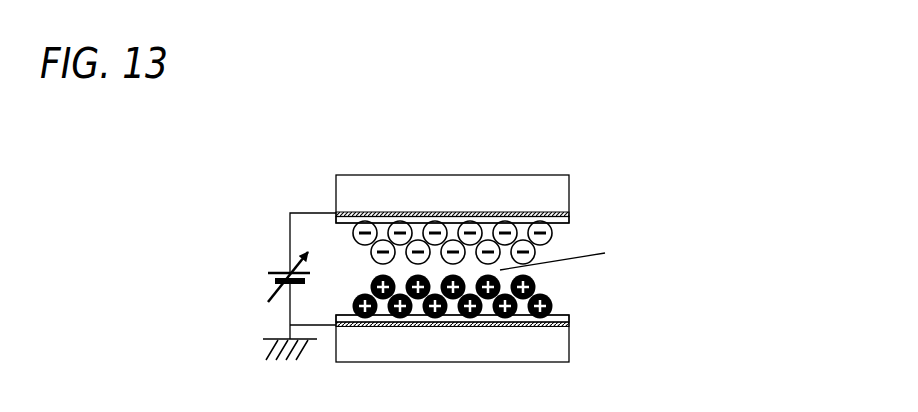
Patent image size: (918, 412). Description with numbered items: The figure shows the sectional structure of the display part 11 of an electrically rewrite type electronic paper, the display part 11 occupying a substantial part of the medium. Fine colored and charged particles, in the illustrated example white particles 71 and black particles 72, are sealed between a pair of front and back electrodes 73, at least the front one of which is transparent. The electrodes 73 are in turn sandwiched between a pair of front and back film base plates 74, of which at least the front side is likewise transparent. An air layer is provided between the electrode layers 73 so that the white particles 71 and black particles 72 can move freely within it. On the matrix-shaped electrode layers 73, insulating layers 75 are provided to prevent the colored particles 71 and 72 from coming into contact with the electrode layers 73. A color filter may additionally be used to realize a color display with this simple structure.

The display part 11 is at (318, 168).
The white particles 71 is at (549, 229).
The black particles 72 is at (533, 286).
The electrodes 73 is at (505, 213).
The film base plates 74 is at (500, 185).
The insulating layers 75 is at (530, 221).